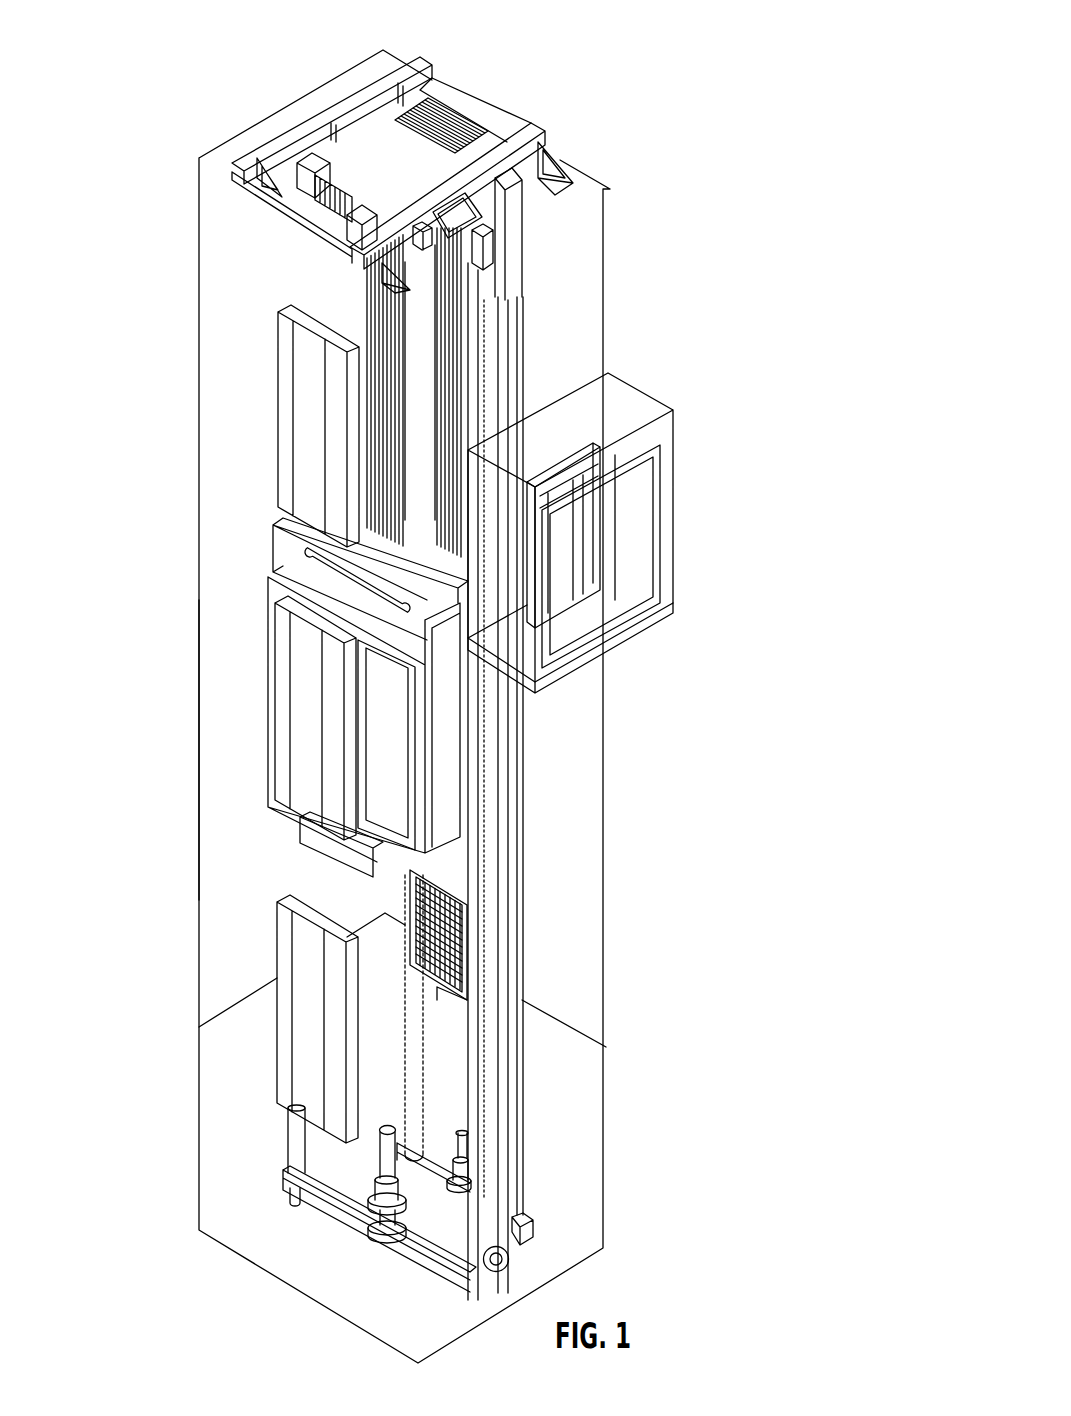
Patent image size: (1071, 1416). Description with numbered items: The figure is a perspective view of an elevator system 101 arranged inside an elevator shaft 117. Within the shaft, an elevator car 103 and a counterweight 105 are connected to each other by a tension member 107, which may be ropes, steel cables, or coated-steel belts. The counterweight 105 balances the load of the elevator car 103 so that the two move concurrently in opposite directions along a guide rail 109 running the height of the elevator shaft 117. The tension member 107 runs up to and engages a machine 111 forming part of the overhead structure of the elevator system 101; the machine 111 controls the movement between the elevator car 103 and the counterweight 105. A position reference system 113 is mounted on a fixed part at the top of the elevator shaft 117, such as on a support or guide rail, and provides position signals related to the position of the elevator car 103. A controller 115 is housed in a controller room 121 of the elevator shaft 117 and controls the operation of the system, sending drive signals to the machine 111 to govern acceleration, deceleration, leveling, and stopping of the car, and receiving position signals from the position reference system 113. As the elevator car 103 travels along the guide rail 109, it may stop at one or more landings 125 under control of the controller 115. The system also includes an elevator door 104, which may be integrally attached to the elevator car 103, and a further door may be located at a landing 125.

The elevator system 101 is at (628, 76).
The elevator car 103 is at (400, 748).
The elevator door 104 is at (300, 762).
The counterweight 105 is at (466, 948).
The tension member 107 is at (400, 419).
The guide rail 109 is at (498, 868).
The machine 111 is at (308, 152).
The position reference system 113 is at (490, 255).
The controller 115 is at (612, 540).
The elevator shaft 117 is at (254, 873).
The controller room 121 is at (680, 401).
The landing 125 is at (278, 415).